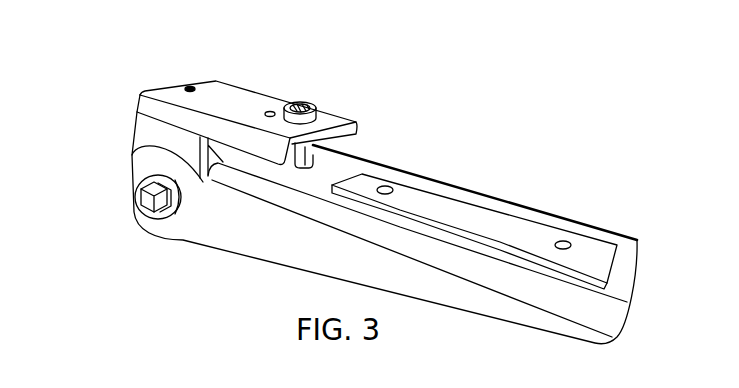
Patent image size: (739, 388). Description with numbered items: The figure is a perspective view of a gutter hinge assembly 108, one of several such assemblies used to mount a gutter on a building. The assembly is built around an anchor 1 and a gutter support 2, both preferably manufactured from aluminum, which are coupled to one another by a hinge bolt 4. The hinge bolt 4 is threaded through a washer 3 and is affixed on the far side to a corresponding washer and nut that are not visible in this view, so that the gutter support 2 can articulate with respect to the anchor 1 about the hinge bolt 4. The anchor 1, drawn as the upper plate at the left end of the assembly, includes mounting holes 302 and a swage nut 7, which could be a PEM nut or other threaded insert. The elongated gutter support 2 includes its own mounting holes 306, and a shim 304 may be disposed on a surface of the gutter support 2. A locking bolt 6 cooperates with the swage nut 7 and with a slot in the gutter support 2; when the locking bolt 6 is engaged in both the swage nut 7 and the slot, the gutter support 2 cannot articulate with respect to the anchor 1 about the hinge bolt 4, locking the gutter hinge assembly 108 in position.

The anchor 1 is at (258, 100).
The gutter support 2 is at (433, 189).
The washer 3 is at (145, 178).
The hinge bolt 4 is at (150, 207).
The locking bolt 6 is at (312, 157).
The swage nut 7 is at (311, 116).
The gutter hinge assembly 108 is at (241, 314).
The mounting holes 302 is at (188, 88).
The shim 304 is at (483, 223).
The mounting holes 306 is at (389, 189).